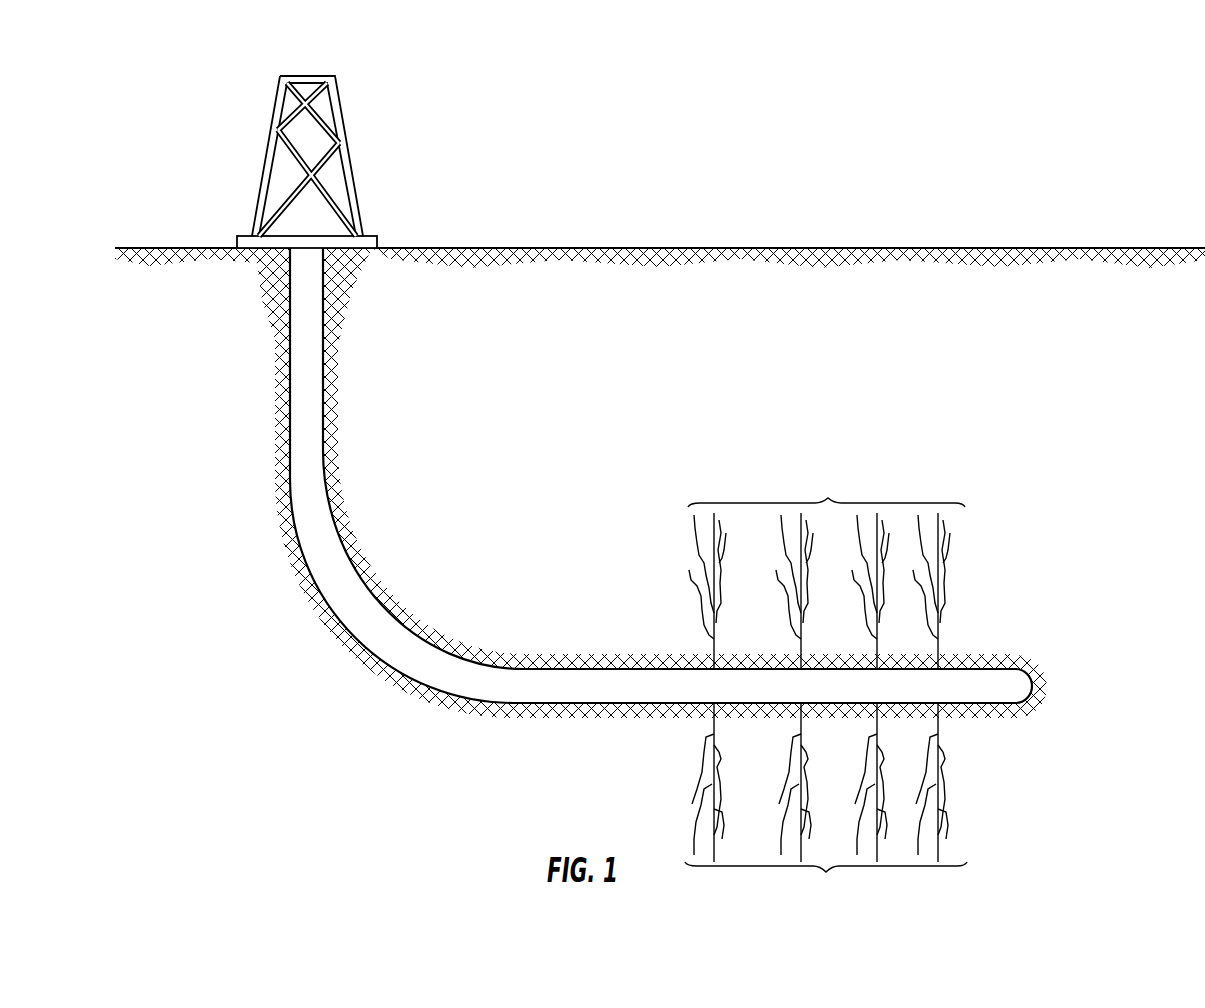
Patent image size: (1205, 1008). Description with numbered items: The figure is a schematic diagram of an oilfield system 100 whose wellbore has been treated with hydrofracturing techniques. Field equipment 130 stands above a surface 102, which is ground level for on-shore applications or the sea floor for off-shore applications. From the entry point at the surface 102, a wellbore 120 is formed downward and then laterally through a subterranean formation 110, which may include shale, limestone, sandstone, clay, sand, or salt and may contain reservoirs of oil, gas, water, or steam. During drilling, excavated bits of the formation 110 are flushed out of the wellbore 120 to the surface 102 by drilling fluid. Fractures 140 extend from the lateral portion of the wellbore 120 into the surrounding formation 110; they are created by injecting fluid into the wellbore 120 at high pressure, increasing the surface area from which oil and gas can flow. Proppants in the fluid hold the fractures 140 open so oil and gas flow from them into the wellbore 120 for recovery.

The oilfield system 100 is at (1092, 104).
The surface 102 is at (768, 248).
The subterranean formation 110 is at (358, 268).
The wellbore 120 is at (308, 426).
The field equipment 130 is at (344, 76).
The fractures 140 is at (826, 685).